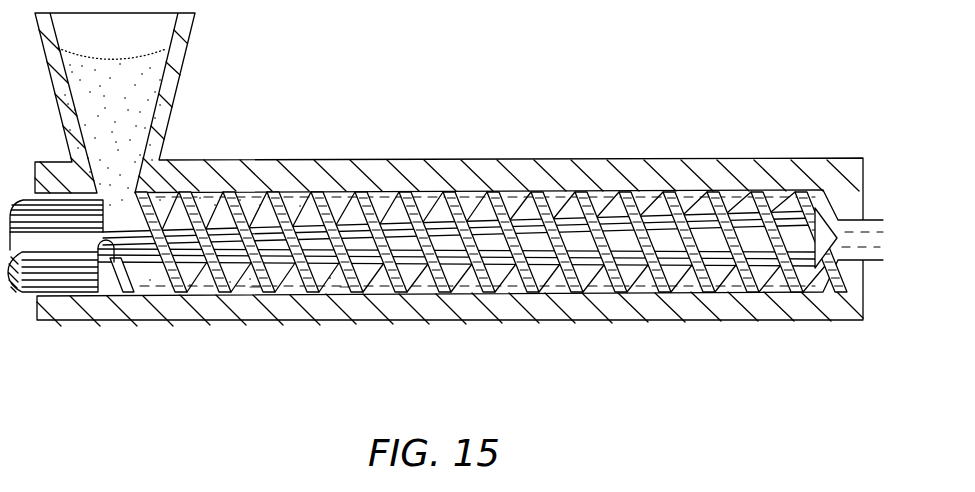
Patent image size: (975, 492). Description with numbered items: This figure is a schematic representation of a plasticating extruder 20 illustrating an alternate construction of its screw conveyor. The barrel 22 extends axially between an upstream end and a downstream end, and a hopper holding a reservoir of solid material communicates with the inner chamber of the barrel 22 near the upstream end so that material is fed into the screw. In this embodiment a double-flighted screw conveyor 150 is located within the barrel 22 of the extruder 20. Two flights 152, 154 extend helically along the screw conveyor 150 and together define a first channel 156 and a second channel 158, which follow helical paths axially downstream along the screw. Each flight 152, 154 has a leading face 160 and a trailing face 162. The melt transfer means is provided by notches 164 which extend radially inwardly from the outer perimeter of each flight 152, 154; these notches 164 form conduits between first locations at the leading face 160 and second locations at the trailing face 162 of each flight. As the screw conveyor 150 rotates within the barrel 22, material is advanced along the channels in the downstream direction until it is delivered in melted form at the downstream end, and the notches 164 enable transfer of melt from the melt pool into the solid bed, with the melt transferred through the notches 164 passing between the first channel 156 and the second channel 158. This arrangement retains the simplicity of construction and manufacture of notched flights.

The plasticating extruder 20 is at (430, 158).
The barrel 22 is at (497, 172).
The double-flighted screw conveyor 150 is at (767, 200).
The flight 152 is at (275, 202).
The flight 154 is at (176, 296).
The first channel 156 is at (114, 205).
The second channel 158 is at (243, 198).
The leading face 160 is at (414, 276).
The trailing face 162 is at (387, 273).
The notches 164 is at (256, 283).